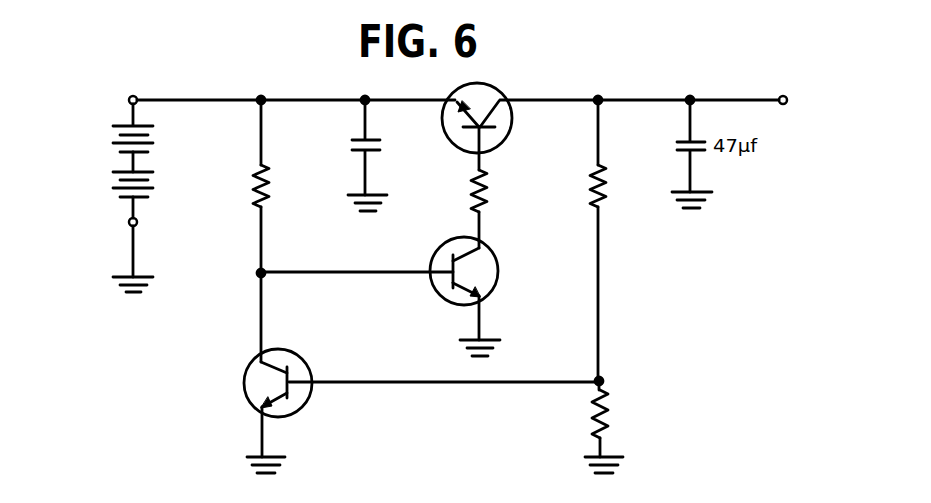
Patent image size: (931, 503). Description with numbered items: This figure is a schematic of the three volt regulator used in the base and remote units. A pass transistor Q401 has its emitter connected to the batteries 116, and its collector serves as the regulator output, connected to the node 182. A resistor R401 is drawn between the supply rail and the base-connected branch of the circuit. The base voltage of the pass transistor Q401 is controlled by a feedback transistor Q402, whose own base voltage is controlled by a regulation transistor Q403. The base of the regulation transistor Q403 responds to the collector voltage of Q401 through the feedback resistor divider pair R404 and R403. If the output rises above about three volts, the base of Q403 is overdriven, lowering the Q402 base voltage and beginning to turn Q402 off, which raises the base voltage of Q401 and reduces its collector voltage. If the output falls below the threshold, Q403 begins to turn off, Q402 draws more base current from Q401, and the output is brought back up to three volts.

The batteries 116 is at (113, 185).
The resistor R401 is at (255, 193).
The pass transistor Q401 is at (491, 92).
The feedback transistor Q402 is at (484, 262).
The regulation transistor Q403 is at (294, 362).
The feedback resistor R404 is at (608, 170).
The feedback resistor R403 is at (594, 415).
The node 182 is at (783, 95).